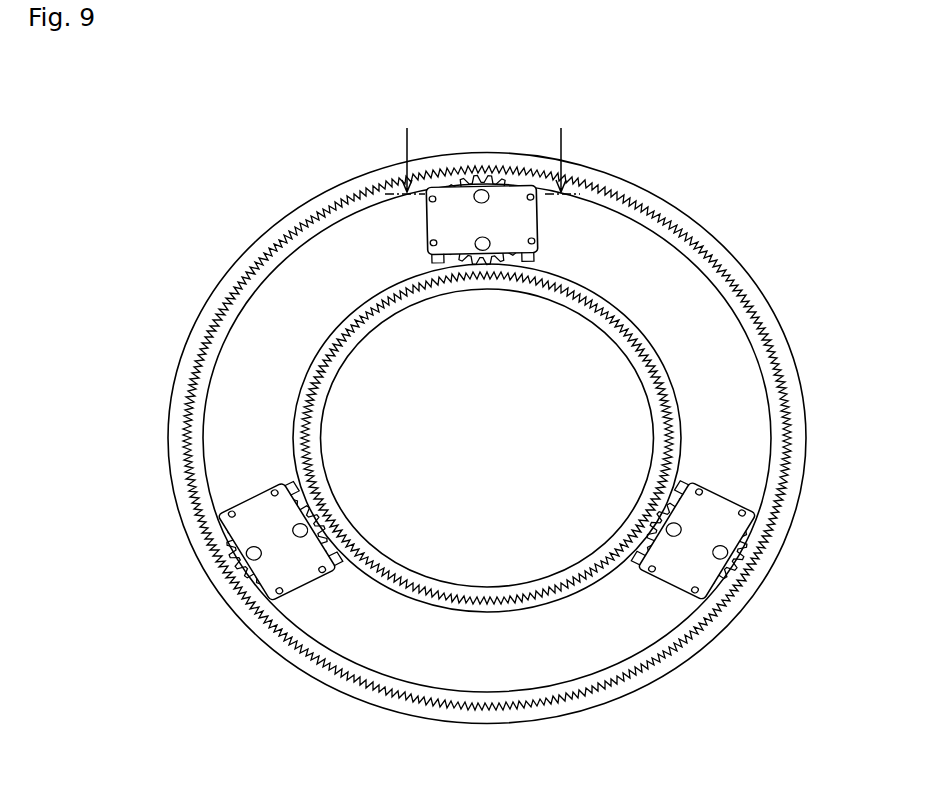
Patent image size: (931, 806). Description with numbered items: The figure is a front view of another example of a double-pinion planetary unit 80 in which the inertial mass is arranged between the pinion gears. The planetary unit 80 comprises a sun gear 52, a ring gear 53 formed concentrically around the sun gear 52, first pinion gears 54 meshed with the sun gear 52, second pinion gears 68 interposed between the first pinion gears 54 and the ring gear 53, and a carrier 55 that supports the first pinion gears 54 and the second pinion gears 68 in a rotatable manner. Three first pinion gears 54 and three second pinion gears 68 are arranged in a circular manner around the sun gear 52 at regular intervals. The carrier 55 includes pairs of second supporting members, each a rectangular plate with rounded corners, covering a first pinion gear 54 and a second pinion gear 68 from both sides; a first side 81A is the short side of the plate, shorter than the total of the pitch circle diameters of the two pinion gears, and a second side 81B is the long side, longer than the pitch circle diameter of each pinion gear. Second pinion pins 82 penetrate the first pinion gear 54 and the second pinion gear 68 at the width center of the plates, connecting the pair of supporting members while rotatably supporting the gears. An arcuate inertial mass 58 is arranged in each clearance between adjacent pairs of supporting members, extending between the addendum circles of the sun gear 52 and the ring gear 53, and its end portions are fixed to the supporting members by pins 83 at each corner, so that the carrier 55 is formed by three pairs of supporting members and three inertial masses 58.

The planetary unit 80 is at (668, 157).
The ring gear 53 is at (790, 415).
The inertial mass 58 is at (710, 286).
The sun gear 52 is at (665, 382).
The first pinion gear 54 is at (435, 262).
The second pinion gear 68 is at (481, 180).
The first side 81A is at (548, 233).
The second side 81B is at (440, 187).
The pin 83 is at (432, 199).
The second pinion pin 82 is at (474, 243).
The carrier 55 is at (532, 221).